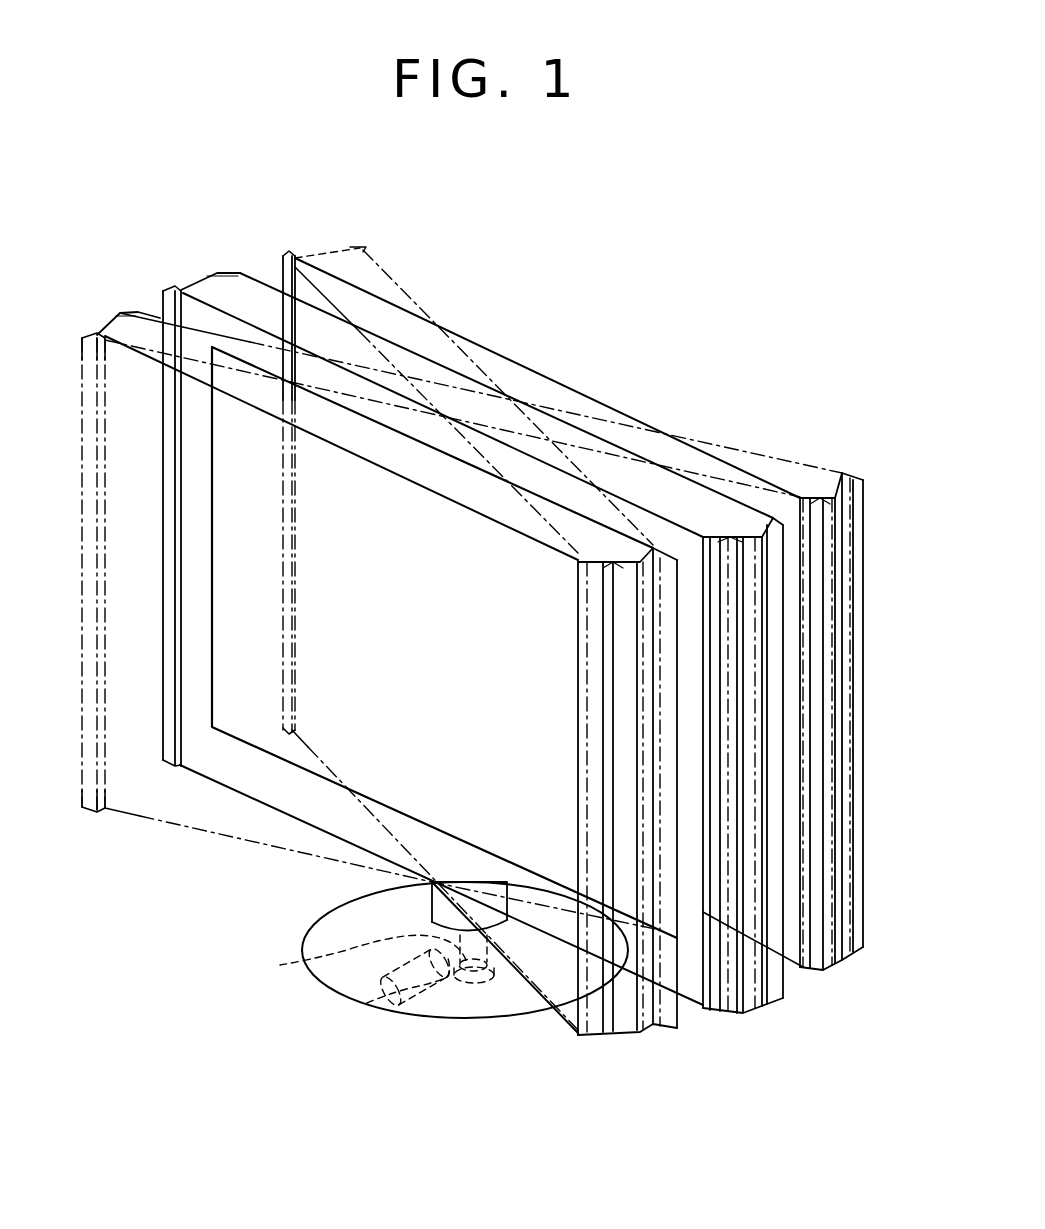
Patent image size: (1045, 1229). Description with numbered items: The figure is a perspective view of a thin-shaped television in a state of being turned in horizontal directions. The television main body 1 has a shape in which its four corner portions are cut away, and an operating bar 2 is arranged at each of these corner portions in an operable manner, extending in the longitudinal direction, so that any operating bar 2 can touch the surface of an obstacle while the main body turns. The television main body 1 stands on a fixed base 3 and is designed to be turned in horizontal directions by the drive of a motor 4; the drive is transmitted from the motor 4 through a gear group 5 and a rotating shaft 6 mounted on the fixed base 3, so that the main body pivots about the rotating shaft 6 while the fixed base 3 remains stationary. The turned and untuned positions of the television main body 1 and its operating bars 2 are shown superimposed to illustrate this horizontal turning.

The television main body 1 is at (413, 318).
The operating bar 2 is at (85, 336).
The fixed base 3 is at (504, 1010).
The motor 4 is at (393, 990).
The gear group 5 is at (446, 985).
The rotating shaft 6 is at (400, 938).